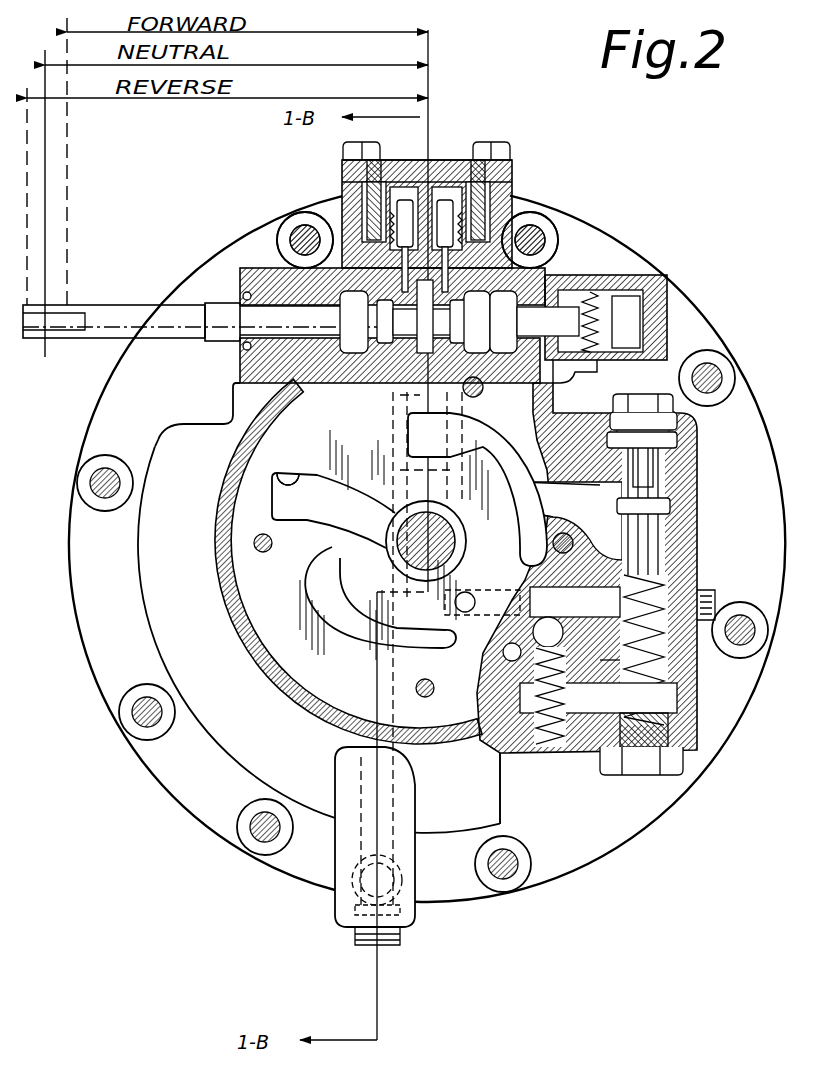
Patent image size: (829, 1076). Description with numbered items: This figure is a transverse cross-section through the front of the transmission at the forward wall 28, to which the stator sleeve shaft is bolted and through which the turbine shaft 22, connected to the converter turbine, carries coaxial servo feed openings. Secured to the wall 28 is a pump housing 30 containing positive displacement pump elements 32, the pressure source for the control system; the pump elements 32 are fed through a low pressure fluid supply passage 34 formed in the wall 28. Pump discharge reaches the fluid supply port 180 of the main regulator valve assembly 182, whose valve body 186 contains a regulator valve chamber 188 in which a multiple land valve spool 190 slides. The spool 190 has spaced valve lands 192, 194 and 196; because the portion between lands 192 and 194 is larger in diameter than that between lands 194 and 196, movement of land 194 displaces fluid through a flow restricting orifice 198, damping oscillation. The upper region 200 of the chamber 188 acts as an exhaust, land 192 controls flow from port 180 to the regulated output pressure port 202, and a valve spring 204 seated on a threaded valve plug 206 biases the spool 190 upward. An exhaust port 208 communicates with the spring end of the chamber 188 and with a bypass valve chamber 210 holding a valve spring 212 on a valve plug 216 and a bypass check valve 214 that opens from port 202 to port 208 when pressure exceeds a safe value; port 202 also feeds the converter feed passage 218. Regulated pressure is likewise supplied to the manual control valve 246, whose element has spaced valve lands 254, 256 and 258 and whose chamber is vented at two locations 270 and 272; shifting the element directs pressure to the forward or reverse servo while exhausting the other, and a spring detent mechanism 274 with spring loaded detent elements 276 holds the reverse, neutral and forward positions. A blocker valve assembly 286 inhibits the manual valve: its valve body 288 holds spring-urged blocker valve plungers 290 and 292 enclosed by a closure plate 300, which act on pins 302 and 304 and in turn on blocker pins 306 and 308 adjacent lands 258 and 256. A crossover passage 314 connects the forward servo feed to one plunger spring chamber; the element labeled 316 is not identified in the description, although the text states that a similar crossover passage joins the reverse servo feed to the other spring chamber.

The turbine shaft 22 is at (458, 532).
The forward wall 28 is at (337, 893).
The pump housing 30 is at (227, 588).
The positive displacement pump elements 32 is at (300, 464).
The low pressure fluid supply passage 34 is at (357, 758).
The fluid supply port 180 is at (663, 520).
The main regulator valve assembly 182 is at (660, 467).
The valve body 186 is at (665, 408).
The regulator valve chamber 188 is at (630, 662).
The multiple land valve spool 190 is at (655, 545).
The valve land 192 is at (622, 603).
The valve land 194 is at (670, 500).
The valve land 196 is at (677, 445).
The flow restricting orifice 198 is at (603, 500).
The upper region of the chamber 200 is at (670, 425).
The regulated output pressure port 202 is at (697, 592).
The valve spring 204 is at (640, 690).
The threaded valve plug 206 is at (600, 738).
The exhaust port 208 is at (600, 713).
The bypass valve chamber 210 is at (478, 684).
The valve spring 212 is at (488, 662).
The bypass check valve 214 is at (498, 612).
The valve plug 216 is at (500, 762).
The converter feed passage 218 is at (398, 413).
The manual control valve 246 is at (447, 440).
The valve land 254 is at (218, 323).
The valve land 256 is at (343, 313).
The valve land 258 is at (470, 322).
The vent 270 is at (440, 344).
The vent 272 is at (378, 383).
The spring detent mechanism 274 is at (562, 376).
The spring loaded detent elements 276 is at (603, 277).
The blocker valve assembly 286 is at (500, 213).
The valve body 288 is at (507, 183).
The blocker valve plunger 290 is at (433, 193).
The blocker valve plunger 292 is at (400, 197).
The closure plate 300 is at (342, 166).
The pin 302 is at (512, 238).
The pin 304 is at (322, 212).
The blocker pin 306 is at (537, 282).
The blocker pin 308 is at (345, 240).
The crossover passage 314 is at (396, 440).
The detent ball 316 is at (410, 467).